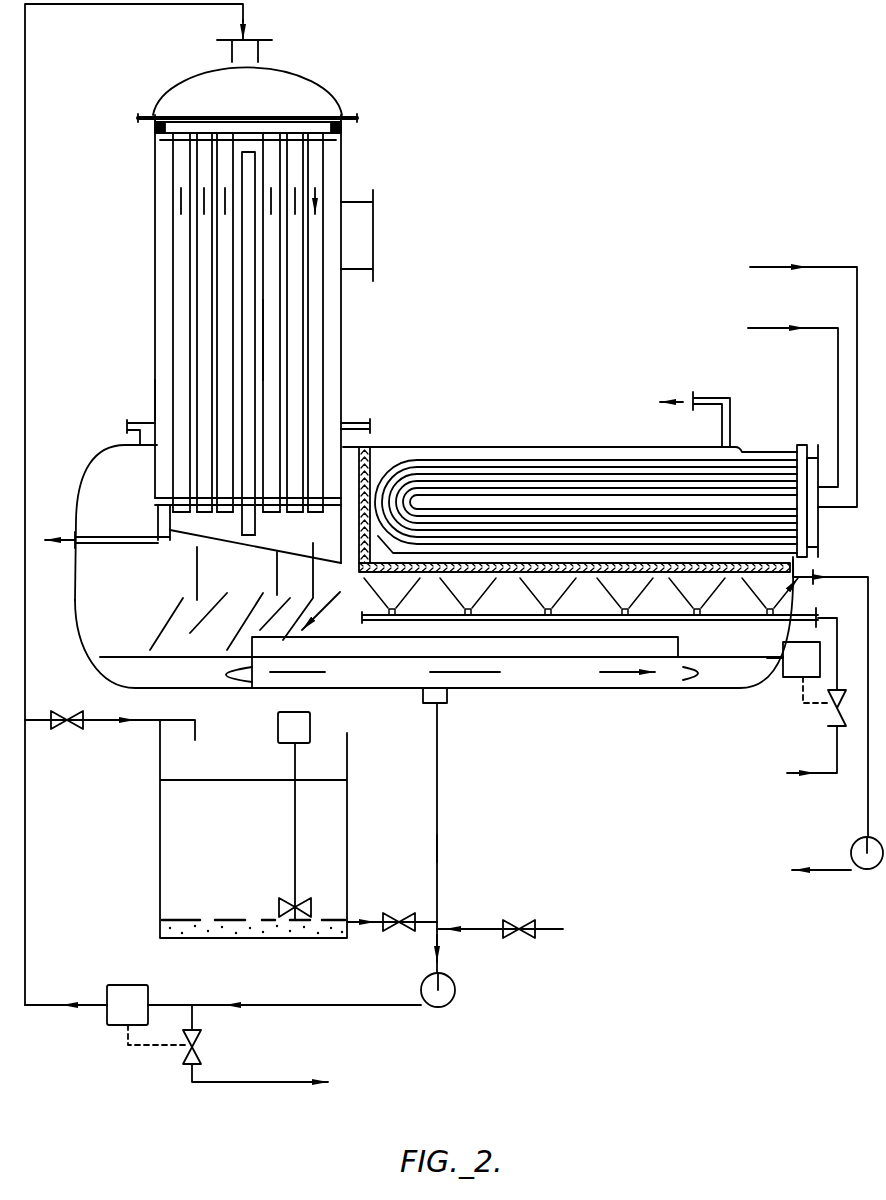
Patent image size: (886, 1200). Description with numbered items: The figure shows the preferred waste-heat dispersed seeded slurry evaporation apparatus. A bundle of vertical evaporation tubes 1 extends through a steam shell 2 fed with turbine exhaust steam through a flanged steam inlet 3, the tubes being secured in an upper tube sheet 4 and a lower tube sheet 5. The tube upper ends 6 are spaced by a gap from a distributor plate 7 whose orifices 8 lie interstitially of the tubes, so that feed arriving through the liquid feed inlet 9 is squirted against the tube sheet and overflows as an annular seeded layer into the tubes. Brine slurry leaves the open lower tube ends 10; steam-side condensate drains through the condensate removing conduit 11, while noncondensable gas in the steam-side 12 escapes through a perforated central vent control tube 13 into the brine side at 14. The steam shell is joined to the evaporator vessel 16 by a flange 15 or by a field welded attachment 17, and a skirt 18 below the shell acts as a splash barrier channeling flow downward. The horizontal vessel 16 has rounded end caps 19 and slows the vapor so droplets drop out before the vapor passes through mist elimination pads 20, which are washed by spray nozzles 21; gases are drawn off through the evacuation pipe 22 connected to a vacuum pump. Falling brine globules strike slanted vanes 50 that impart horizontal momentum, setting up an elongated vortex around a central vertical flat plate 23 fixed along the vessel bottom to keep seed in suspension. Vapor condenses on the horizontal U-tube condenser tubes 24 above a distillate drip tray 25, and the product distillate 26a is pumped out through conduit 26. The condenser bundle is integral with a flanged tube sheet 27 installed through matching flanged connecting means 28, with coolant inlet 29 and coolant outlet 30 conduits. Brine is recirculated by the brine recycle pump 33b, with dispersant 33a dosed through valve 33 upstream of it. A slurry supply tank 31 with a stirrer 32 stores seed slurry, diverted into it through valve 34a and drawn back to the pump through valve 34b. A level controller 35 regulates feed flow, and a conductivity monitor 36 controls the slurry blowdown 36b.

The vertical evaporation tube 1 is at (175, 276).
The steam shell 2 is at (155, 300).
The flanged steam inlet 3 is at (373, 262).
The upper tube sheet 4 is at (162, 148).
The lower tube sheet 5 is at (158, 396).
The tube upper ends 6 is at (155, 132).
The distributor plate 7 is at (181, 110).
The orifices 8 is at (256, 122).
The liquid feed inlet 9 is at (240, 38).
The lower tube ends 10 is at (214, 513).
The condensate removing conduit 11 is at (170, 544).
The steam-side 12 is at (262, 340).
The vent control tube 13 is at (250, 382).
The brine side 14 is at (258, 534).
The flange 15 is at (127, 426).
The evaporator vessel 16 is at (122, 470).
The field welded attachment 17 is at (362, 446).
The skirt 18 is at (267, 560).
The rounded end caps 19 is at (76, 642).
The mist elimination pads 20 is at (372, 470).
The spray nozzles 21 is at (668, 624).
The evacuation pipe 22 is at (714, 408).
The central vertical flat plate 23 is at (683, 653).
The condenser tubes 24 is at (741, 489).
The distillate drip tray 25 is at (600, 572).
The distillate conduit 26 is at (813, 578).
The product distillate 26a is at (806, 869).
The flanged tube sheet 27 is at (813, 452).
The flanged connecting means 28 is at (797, 452).
The coolant inlet conduit 29 is at (818, 487).
The coolant outlet conduit 30 is at (818, 507).
The slurry supply tank 31 is at (160, 744).
The stirrer 32 is at (298, 750).
The dispersant dosing valve 33 is at (520, 940).
The dispersant 33a is at (556, 928).
The brine recycle pump 33b is at (447, 1004).
The diversion valve 34a is at (76, 729).
The slurry supply valve 34b is at (399, 934).
The level controller 35 is at (793, 680).
The conductivity monitor 36 is at (107, 1015).
The slurry blowdown 36b is at (282, 1082).
The slanted vanes 50 is at (200, 620).